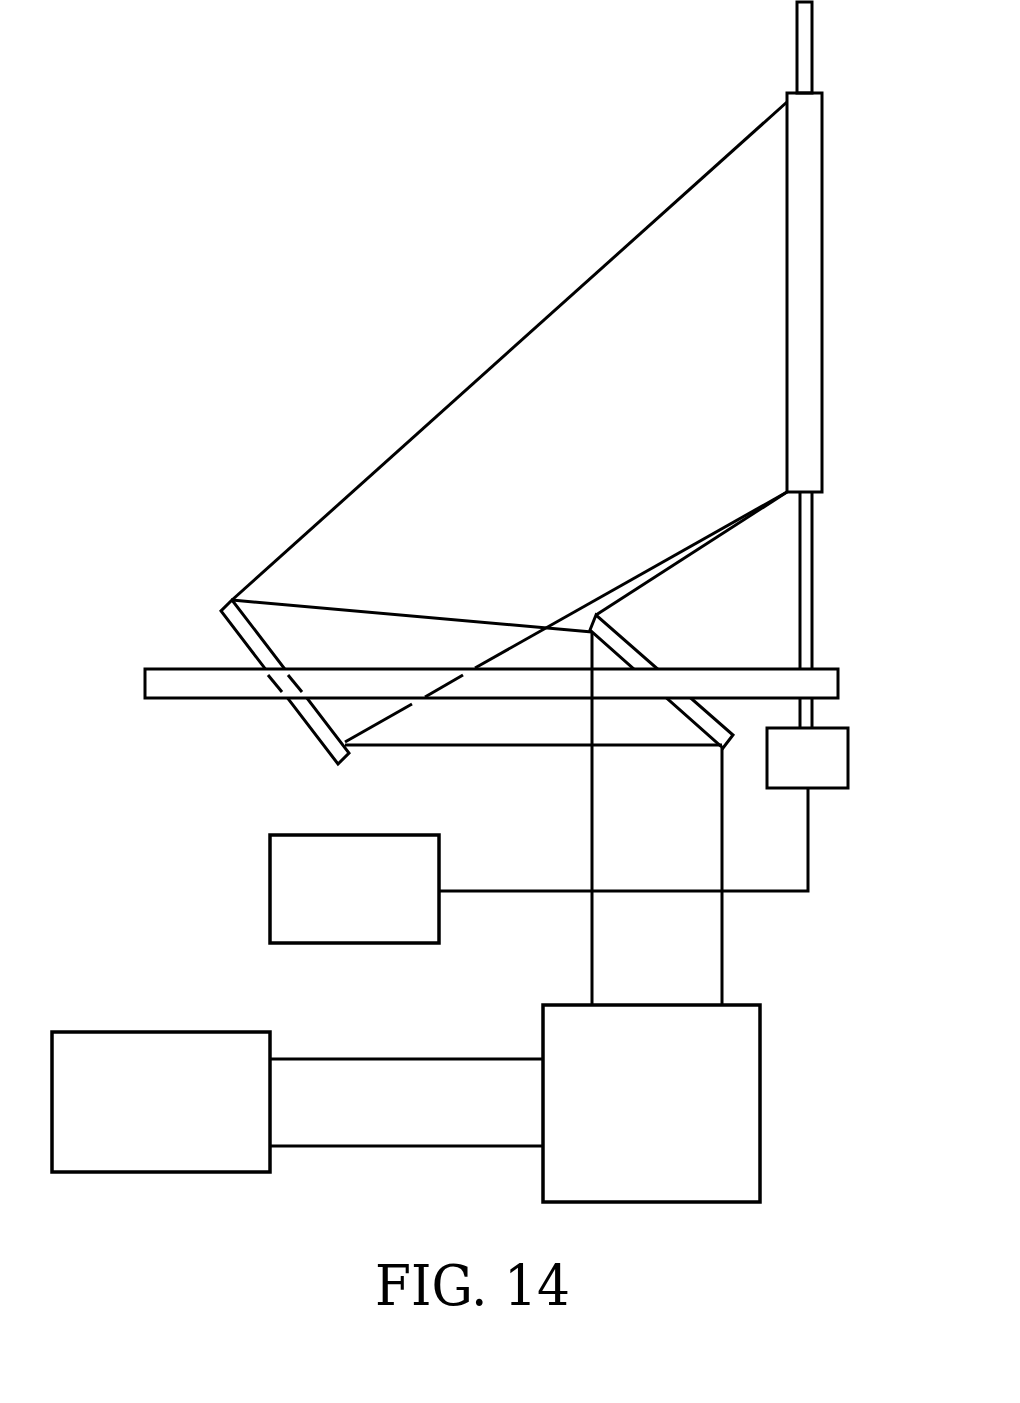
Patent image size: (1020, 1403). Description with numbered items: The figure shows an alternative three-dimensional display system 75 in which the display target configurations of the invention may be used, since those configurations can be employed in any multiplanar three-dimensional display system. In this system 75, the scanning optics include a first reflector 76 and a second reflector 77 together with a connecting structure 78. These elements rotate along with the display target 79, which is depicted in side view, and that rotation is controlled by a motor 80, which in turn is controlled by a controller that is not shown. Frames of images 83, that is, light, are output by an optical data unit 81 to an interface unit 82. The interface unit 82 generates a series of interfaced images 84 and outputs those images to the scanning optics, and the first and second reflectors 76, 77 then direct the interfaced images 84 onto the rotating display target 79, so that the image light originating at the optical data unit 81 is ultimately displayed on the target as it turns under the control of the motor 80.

The 3-D display system 75 is at (234, 326).
The first reflector 76 is at (632, 634).
The second reflector 77 is at (258, 634).
The connecting structure 78 is at (195, 687).
The display target 79 is at (812, 258).
The motor 80 is at (270, 886).
The optical data unit 81 is at (148, 1030).
The interface unit 82 is at (760, 1063).
The frames of images 83 is at (345, 1062).
The interfaced images 84 is at (721, 973).